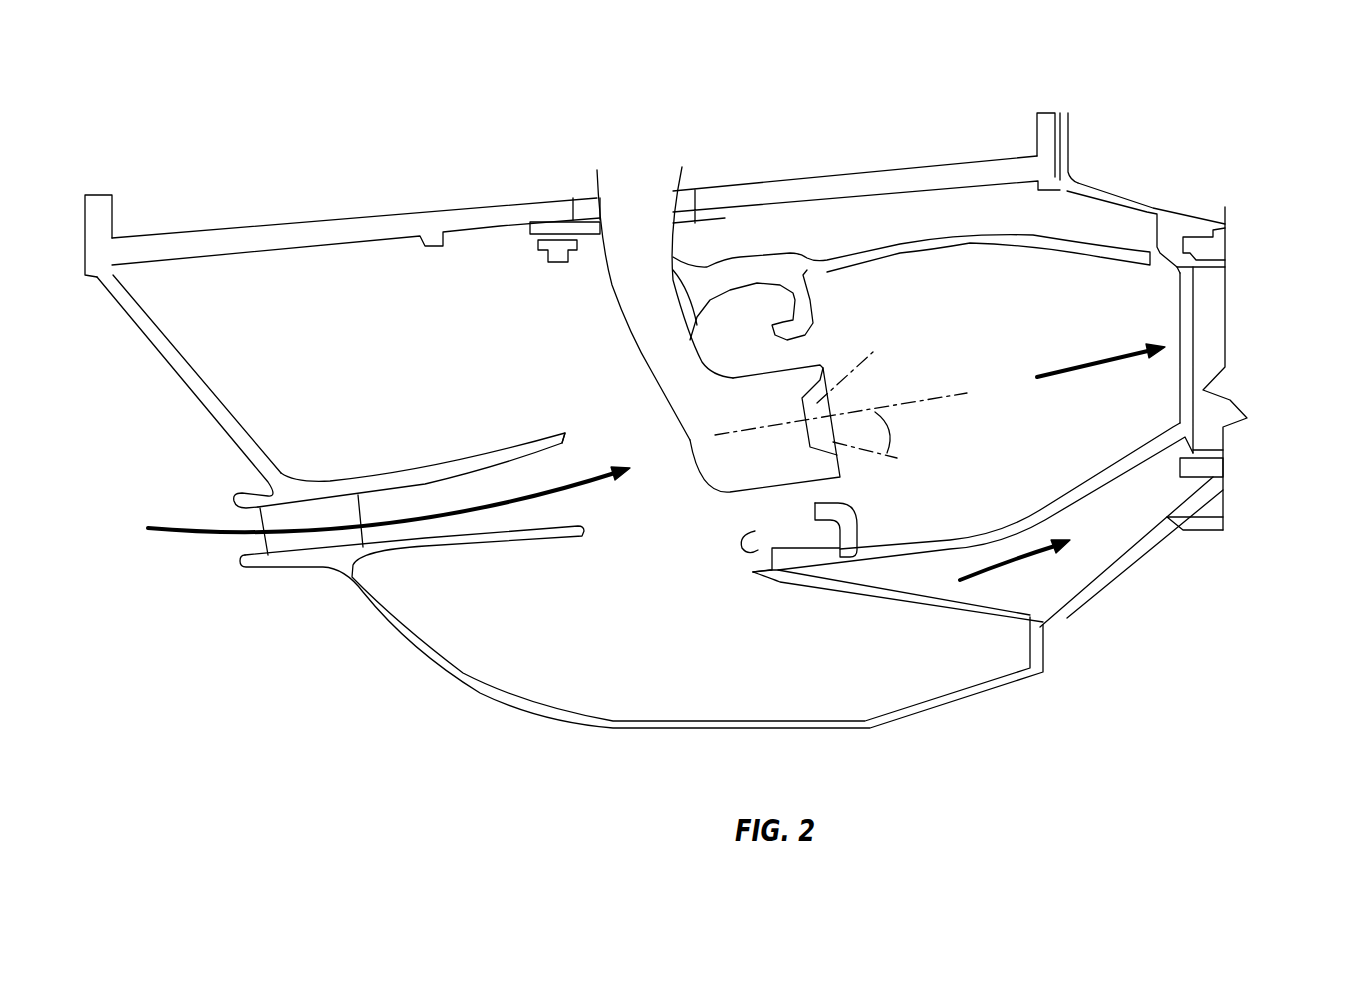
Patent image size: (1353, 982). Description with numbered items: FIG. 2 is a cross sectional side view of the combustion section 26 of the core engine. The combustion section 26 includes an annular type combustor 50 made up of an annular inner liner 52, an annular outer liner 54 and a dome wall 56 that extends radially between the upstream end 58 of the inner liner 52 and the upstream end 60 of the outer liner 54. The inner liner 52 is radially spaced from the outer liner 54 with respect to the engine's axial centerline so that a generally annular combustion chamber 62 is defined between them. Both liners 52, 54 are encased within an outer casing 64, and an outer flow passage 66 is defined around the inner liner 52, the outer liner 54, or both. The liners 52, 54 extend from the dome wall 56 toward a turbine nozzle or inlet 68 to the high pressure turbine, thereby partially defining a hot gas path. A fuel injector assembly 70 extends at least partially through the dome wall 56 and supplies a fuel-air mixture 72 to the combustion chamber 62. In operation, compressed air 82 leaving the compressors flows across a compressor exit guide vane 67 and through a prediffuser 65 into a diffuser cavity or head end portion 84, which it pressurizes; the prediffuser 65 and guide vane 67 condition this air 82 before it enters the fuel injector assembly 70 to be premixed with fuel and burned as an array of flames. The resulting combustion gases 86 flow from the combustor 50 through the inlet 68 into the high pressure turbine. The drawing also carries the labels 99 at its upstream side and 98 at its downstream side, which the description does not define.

The combustion section 26 is at (845, 92).
The annular type combustor 50 is at (923, 225).
The annular inner liner 52 is at (1018, 523).
The annular outer liner 54 is at (895, 262).
The dome wall 56 is at (795, 505).
The upstream end of inner liner 58 is at (815, 578).
The upstream end of outer liner 60 is at (757, 247).
The combustion chamber 62 is at (1002, 380).
The outer casing 64 is at (1003, 146).
The prediffuser 65 is at (527, 432).
The outer flow passage 66 is at (1070, 213).
The compressor exit guide vane 67 is at (335, 512).
The turbine nozzle or inlet 68 is at (1210, 325).
The fuel injector assembly 70 is at (764, 420).
The fuel-air mixture 72 is at (888, 432).
The compressed air 82 is at (403, 522).
The diffuser cavity or head end portion 84 is at (443, 277).
The combustion gases 86 is at (1093, 364).
The downstream turbine section 98 is at (1312, 353).
The upstream compressor section 99 is at (119, 485).